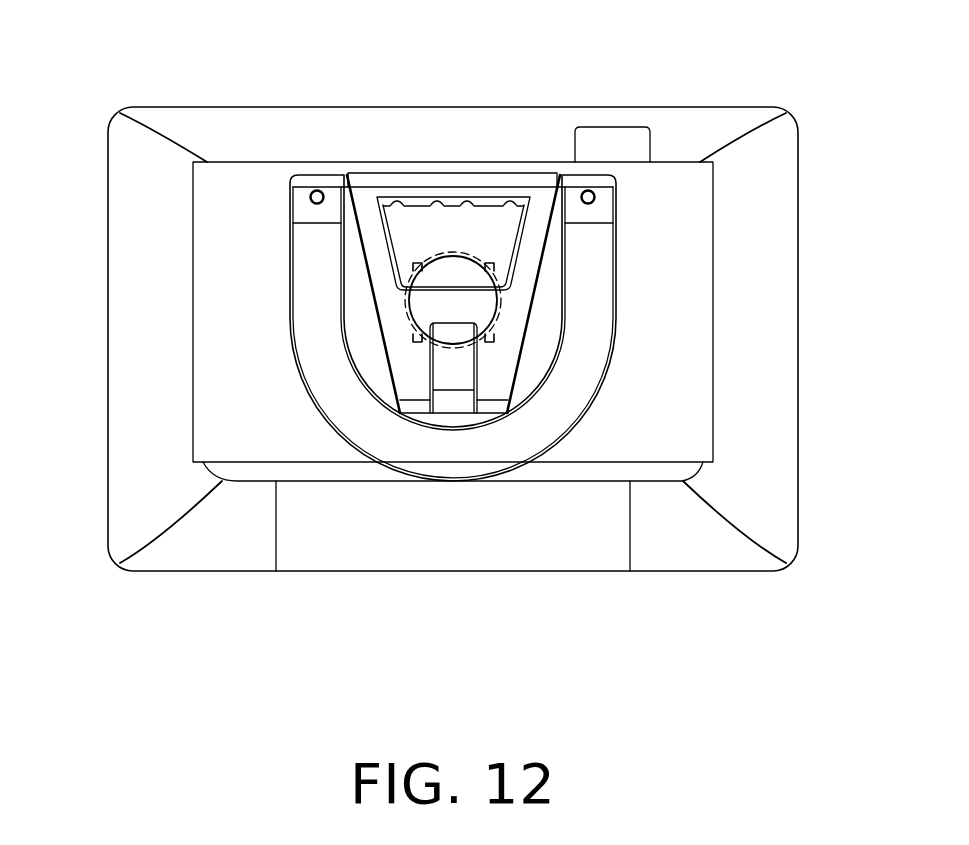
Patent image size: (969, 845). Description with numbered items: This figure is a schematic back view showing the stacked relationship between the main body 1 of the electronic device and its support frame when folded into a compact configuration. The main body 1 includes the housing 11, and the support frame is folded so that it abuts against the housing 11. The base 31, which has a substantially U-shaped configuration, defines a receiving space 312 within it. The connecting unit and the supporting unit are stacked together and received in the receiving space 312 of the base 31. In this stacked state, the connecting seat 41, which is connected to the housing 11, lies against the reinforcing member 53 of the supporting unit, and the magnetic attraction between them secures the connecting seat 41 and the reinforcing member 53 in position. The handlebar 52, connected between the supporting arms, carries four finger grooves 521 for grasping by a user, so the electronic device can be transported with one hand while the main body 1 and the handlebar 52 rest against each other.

The main body 1 is at (698, 108).
The housing 11 is at (772, 353).
The base 31 is at (448, 455).
The receiving space 312 is at (538, 347).
The connecting seat 41 is at (447, 277).
The handlebar 52 is at (485, 182).
The finger grooves 521 is at (473, 207).
The reinforcing member 53 is at (432, 307).